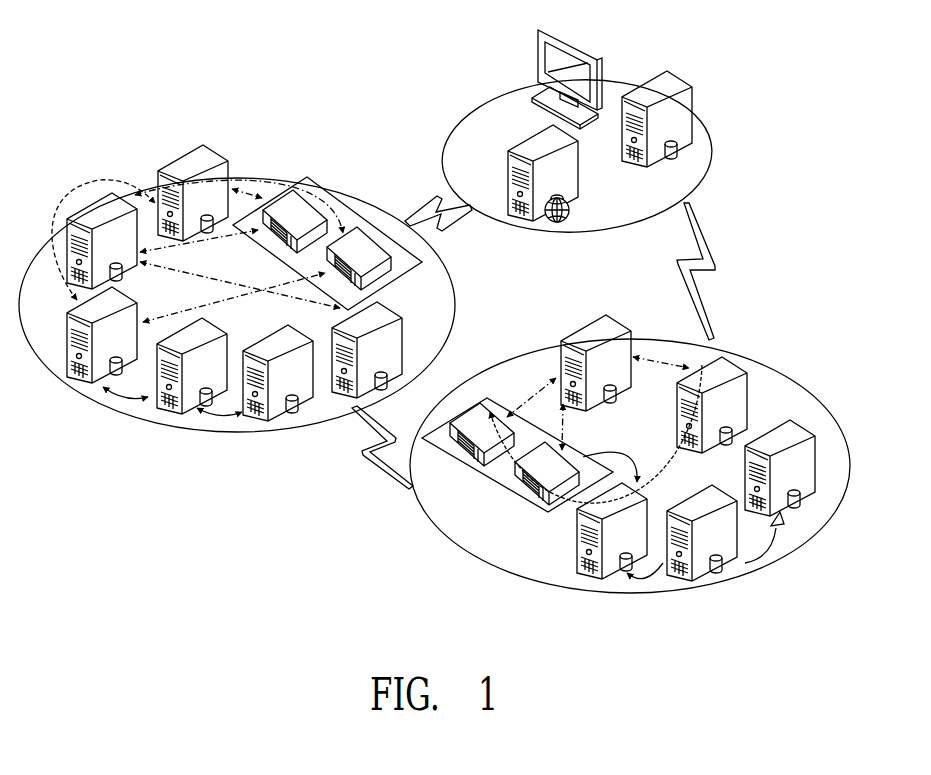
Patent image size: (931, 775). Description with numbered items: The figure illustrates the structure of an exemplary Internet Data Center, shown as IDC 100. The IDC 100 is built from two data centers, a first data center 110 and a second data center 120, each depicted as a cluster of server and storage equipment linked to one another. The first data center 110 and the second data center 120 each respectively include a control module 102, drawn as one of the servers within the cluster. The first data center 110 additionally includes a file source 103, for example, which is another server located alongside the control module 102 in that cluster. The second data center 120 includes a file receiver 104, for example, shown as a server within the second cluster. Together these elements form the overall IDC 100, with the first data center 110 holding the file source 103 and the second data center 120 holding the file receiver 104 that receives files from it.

The Internet Data Center 100 is at (395, 61).
The control module 102 is at (187, 167).
The file source 103 is at (93, 207).
The file receiver 104 is at (590, 335).
The first data center 110 is at (340, 202).
The second data center 120 is at (790, 397).